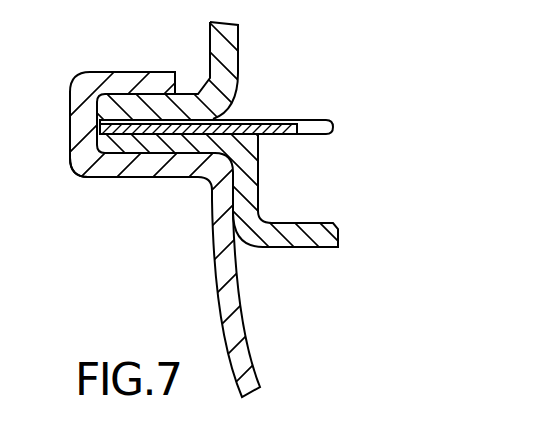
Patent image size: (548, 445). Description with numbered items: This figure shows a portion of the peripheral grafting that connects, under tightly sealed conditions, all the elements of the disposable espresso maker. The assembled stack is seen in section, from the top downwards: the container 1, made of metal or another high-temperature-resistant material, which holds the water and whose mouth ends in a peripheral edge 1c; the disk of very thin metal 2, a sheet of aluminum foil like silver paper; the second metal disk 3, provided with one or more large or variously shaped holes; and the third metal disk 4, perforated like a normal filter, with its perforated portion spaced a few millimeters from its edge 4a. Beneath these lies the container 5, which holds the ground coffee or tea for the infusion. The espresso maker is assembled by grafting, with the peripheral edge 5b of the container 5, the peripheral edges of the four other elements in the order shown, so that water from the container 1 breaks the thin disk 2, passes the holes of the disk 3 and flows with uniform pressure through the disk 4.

The container 1 is at (228, 53).
The peripheral edge 1c is at (130, 103).
The disk of very thin metal 2 is at (248, 118).
The second metal disk 3 is at (293, 135).
The third metal disk 4 is at (297, 230).
The edge 4a is at (178, 143).
The container 5 is at (238, 307).
The peripheral edge 5b is at (88, 163).